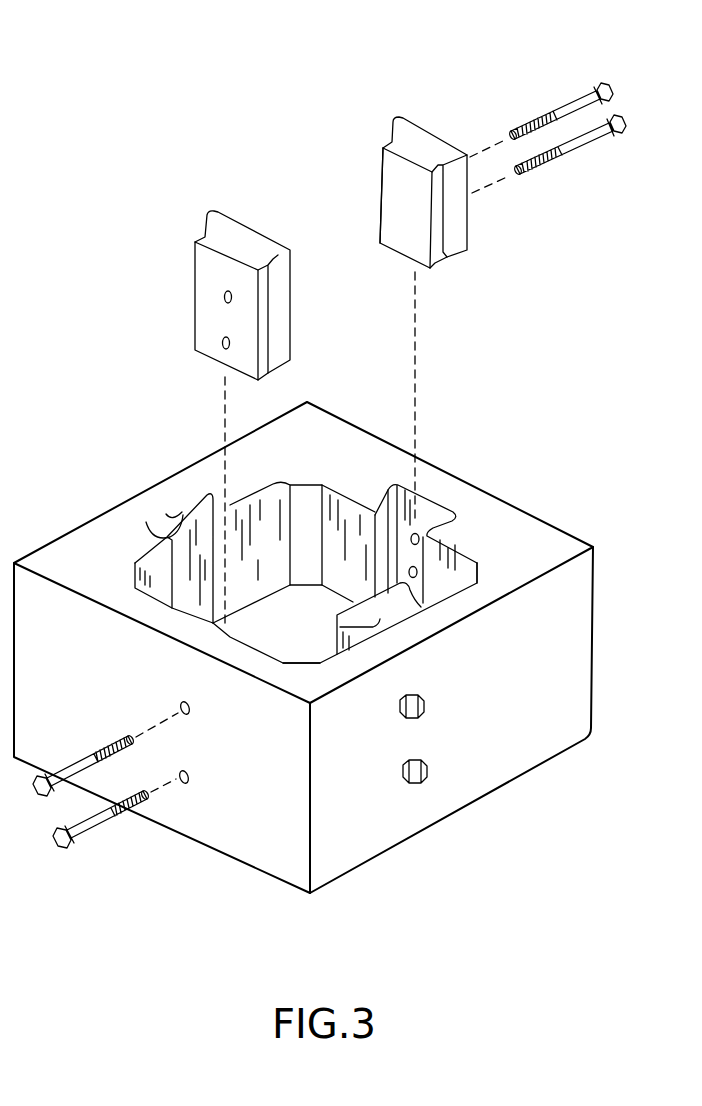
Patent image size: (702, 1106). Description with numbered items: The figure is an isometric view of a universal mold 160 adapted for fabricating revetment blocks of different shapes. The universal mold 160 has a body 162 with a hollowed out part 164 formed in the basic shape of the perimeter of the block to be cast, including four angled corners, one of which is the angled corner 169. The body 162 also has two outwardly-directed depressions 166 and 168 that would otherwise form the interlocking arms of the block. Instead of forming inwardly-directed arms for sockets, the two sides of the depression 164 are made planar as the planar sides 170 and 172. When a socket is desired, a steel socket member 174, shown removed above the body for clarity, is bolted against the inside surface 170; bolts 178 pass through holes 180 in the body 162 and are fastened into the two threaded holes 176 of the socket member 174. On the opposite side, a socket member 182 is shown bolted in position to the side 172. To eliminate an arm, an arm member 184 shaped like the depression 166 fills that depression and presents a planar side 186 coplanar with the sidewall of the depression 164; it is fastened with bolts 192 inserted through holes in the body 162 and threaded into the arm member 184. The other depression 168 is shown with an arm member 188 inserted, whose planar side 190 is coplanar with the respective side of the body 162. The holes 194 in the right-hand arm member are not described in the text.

The universal mold 160 is at (612, 330).
The body 162 is at (595, 614).
The hollowed out part 164 is at (348, 518).
The outwardly-directed depression 166 is at (433, 512).
The outwardly-directed depression 168 is at (180, 513).
The angled corner 169 is at (478, 577).
The planar side 170 is at (233, 637).
The planar side 172 is at (332, 666).
The socket member 174 is at (237, 232).
The threaded holes 176 is at (220, 341).
The bolts 178 is at (58, 763).
The holes 180 is at (189, 713).
The socket member 182 is at (393, 610).
The arm member 184 is at (407, 132).
The planar side 186 is at (390, 190).
The arm member 188 is at (153, 531).
The planar side 190 is at (190, 590).
The bolts 192 is at (558, 103).
The slab holes 194 is at (410, 540).